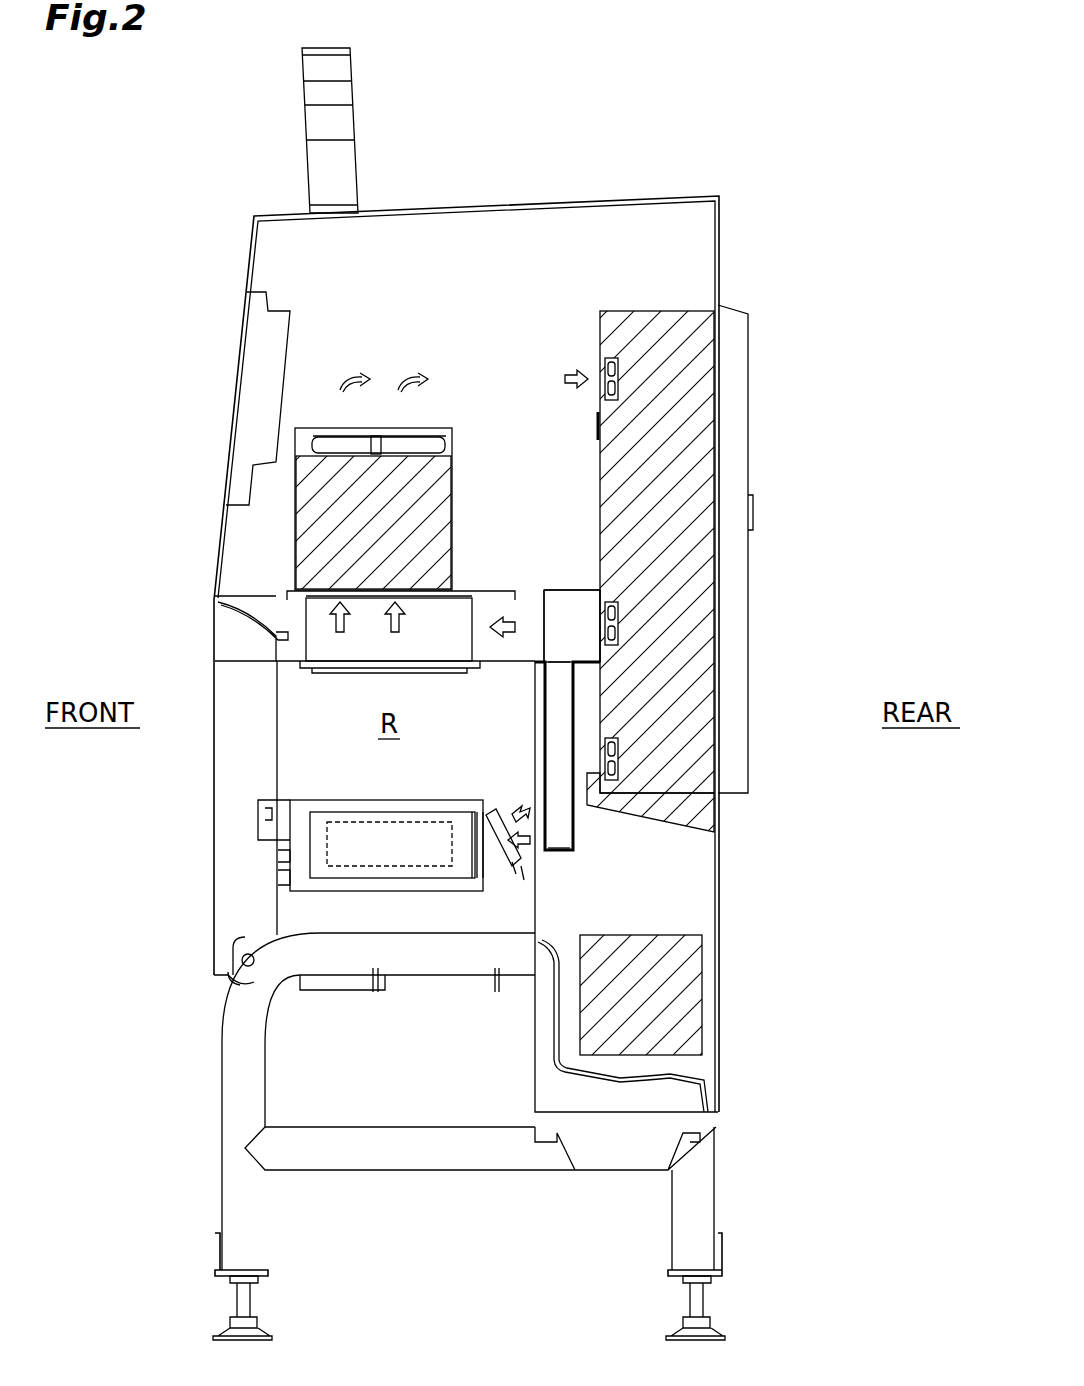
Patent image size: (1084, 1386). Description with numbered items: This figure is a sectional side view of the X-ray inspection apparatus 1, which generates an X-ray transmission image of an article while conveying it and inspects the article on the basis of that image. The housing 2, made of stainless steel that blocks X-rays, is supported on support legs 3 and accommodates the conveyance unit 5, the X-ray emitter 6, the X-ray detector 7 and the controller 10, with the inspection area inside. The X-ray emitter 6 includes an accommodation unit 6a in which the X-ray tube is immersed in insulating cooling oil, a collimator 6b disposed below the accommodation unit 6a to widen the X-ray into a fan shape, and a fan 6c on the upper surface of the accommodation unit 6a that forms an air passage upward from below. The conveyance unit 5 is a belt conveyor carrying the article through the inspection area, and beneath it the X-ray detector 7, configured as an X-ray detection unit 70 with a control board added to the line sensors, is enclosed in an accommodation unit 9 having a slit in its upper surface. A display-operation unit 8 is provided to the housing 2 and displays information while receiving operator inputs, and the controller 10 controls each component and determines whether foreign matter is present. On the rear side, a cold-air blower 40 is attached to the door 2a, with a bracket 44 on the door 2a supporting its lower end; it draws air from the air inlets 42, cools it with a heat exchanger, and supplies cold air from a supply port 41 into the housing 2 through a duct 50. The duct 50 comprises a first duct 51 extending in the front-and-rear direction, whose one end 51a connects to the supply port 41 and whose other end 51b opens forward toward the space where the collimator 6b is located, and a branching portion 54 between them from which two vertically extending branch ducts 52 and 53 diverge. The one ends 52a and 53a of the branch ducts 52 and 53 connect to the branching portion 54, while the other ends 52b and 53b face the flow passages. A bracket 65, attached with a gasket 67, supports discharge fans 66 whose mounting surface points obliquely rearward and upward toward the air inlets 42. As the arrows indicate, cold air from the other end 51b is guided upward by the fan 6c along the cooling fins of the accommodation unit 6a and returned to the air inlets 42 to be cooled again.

The X-ray inspection apparatus 1 is at (585, 130).
The housing 2 is at (730, 270).
The door 2a is at (720, 928).
The support legs 3 is at (225, 1125).
The conveyance unit 5 is at (310, 897).
The X-ray emitter 6 is at (330, 532).
The accommodation unit 6a is at (455, 485).
The collimator 6b is at (320, 651).
The fan 6c is at (338, 432).
The X-ray detector 7 is at (287, 845).
The X-ray detection unit 70 is at (350, 857).
The display-operation unit 8 is at (248, 405).
The accommodation unit 9 is at (333, 808).
The controller 10 is at (682, 1005).
The cold-air blower 40 is at (752, 482).
The supply port 41 is at (622, 612).
The air inlets 42 is at (620, 376).
The bracket 44 is at (705, 797).
The duct 50 is at (552, 552).
The first duct 51 is at (578, 590).
The one end of first duct 51a is at (596, 596).
The other end of first duct 51b is at (543, 630).
The branch duct 52 is at (585, 838).
The one end of branch duct 52 52a is at (577, 652).
The other end of branch duct 52 52b is at (547, 840).
The branch duct 53 is at (618, 780).
The one end of branch duct 53 53a is at (474, 722).
The other end of branch duct 53 53b is at (622, 874).
The branching portion 54 is at (622, 636).
The bracket 65 is at (487, 882).
The discharge fans 66 is at (521, 875).
The gasket 67 is at (470, 885).